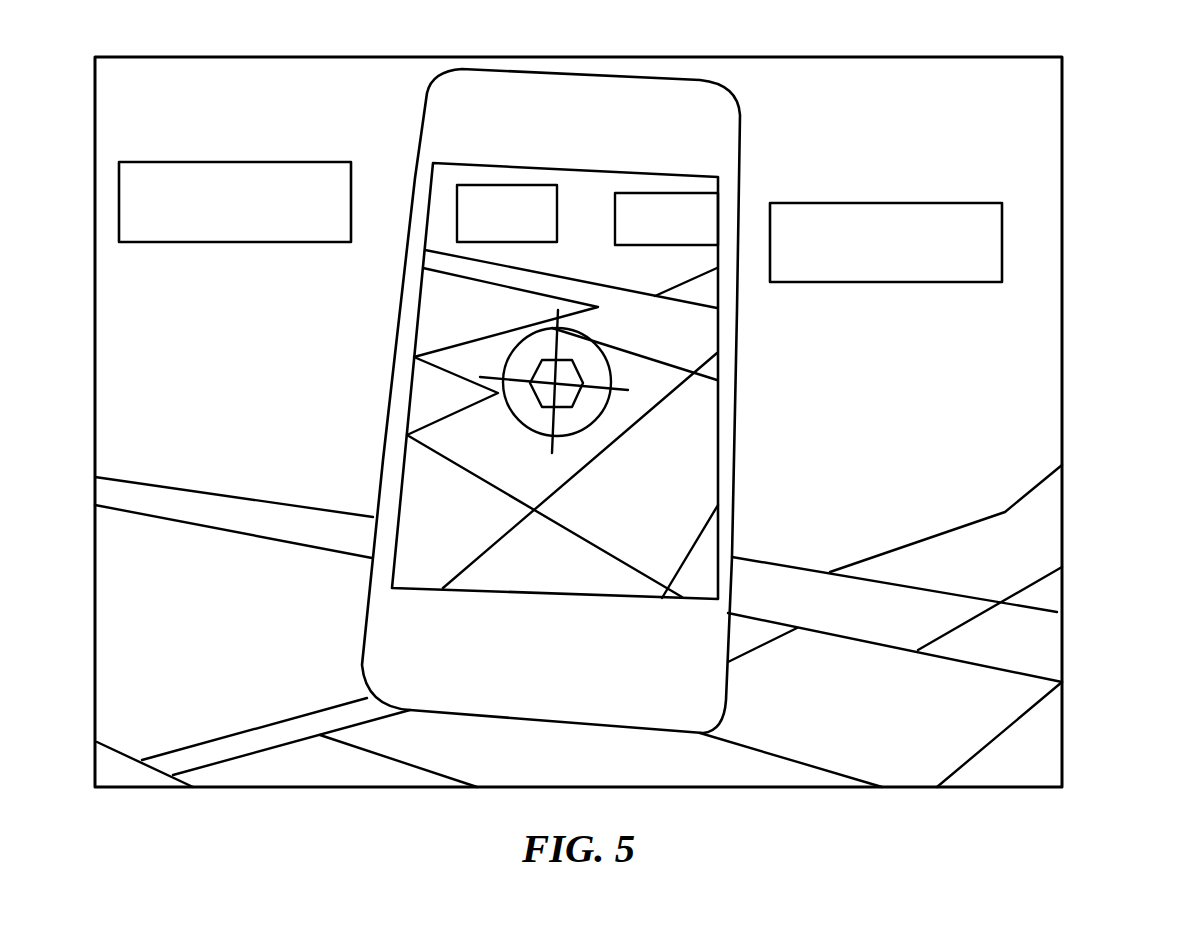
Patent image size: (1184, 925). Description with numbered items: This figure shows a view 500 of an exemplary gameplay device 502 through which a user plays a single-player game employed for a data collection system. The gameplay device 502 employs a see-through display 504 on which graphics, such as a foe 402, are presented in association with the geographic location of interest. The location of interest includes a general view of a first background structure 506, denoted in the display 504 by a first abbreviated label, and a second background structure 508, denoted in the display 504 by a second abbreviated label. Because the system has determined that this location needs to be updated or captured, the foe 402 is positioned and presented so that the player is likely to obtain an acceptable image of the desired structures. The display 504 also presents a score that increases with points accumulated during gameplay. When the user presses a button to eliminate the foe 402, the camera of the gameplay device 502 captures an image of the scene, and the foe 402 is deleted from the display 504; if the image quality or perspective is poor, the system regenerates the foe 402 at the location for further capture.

The view 500 is at (1104, 62).
The gameplay device 502 is at (728, 93).
The see-through display 504 is at (555, 381).
The first background structure 506 is at (302, 162).
The second background structure 508 is at (952, 203).
The foe 402 is at (581, 361).